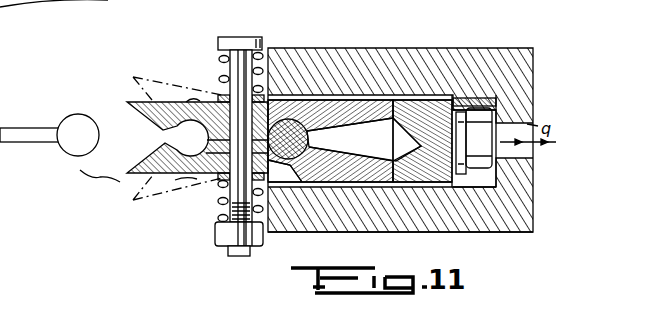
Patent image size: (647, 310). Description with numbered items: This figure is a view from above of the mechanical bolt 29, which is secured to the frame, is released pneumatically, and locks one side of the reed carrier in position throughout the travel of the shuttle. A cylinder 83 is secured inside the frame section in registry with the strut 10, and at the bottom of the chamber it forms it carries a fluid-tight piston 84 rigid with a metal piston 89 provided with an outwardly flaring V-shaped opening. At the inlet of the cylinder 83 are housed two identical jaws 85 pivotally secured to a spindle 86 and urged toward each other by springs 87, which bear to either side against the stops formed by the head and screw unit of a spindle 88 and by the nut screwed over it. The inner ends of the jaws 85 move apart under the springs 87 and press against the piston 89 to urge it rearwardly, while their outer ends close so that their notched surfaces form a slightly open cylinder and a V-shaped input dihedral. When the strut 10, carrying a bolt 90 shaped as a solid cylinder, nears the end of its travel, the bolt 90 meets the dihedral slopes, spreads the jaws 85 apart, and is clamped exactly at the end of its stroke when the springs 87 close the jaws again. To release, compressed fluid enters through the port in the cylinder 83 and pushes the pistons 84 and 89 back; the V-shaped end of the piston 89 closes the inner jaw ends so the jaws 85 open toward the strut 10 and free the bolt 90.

The strut 10 is at (47, 129).
The bolt 90 is at (86, 124).
The mechanical bolt 29 is at (342, 49).
The cylinder 83 is at (416, 216).
The spindle 86 is at (287, 125).
The jaws 85 is at (360, 120).
The metal piston 89 is at (422, 98).
The fluid-tight piston 84 is at (470, 100).
The springs 87 is at (221, 77).
The spindle 88 is at (224, 60).